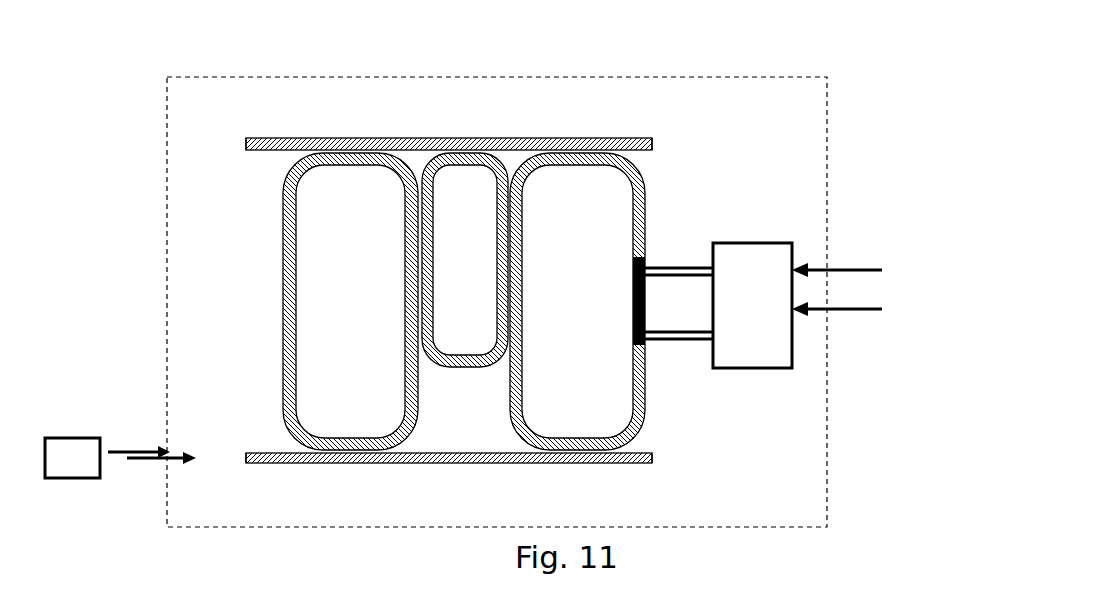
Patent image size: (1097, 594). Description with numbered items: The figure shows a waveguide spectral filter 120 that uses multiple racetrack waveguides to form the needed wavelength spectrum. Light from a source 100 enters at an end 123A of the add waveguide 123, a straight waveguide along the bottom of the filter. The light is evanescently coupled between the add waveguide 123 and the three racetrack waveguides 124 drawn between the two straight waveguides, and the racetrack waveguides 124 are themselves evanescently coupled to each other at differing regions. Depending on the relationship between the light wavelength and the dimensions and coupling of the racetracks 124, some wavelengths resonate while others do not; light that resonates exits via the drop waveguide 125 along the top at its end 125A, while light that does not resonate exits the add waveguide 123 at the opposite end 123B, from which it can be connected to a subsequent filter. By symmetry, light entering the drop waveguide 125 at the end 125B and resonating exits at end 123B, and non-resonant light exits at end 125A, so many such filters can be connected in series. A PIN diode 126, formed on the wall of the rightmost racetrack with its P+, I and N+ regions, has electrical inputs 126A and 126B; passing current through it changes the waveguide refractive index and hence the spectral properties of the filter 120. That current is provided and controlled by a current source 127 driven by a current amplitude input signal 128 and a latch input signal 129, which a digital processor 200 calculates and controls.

The source 100 is at (93, 467).
The digital processor 200 is at (170, 458).
The waveguide spectral filter 120 is at (582, 75).
The add waveguide 123 is at (335, 458).
The end of add waveguide 123A is at (246, 463).
The end of add waveguide 123B is at (655, 458).
The racetrack waveguides 124 is at (425, 397).
The drop waveguide 125 is at (382, 140).
The end of drop waveguide 125A is at (243, 140).
The end of drop waveguide 125B is at (653, 140).
The PIN diode 126 is at (630, 303).
The electrical input 126A is at (680, 266).
The electrical input 126B is at (675, 342).
The current source 127 is at (757, 243).
The current amplitude input signal 128 is at (850, 263).
The latch input signal 129 is at (850, 308).